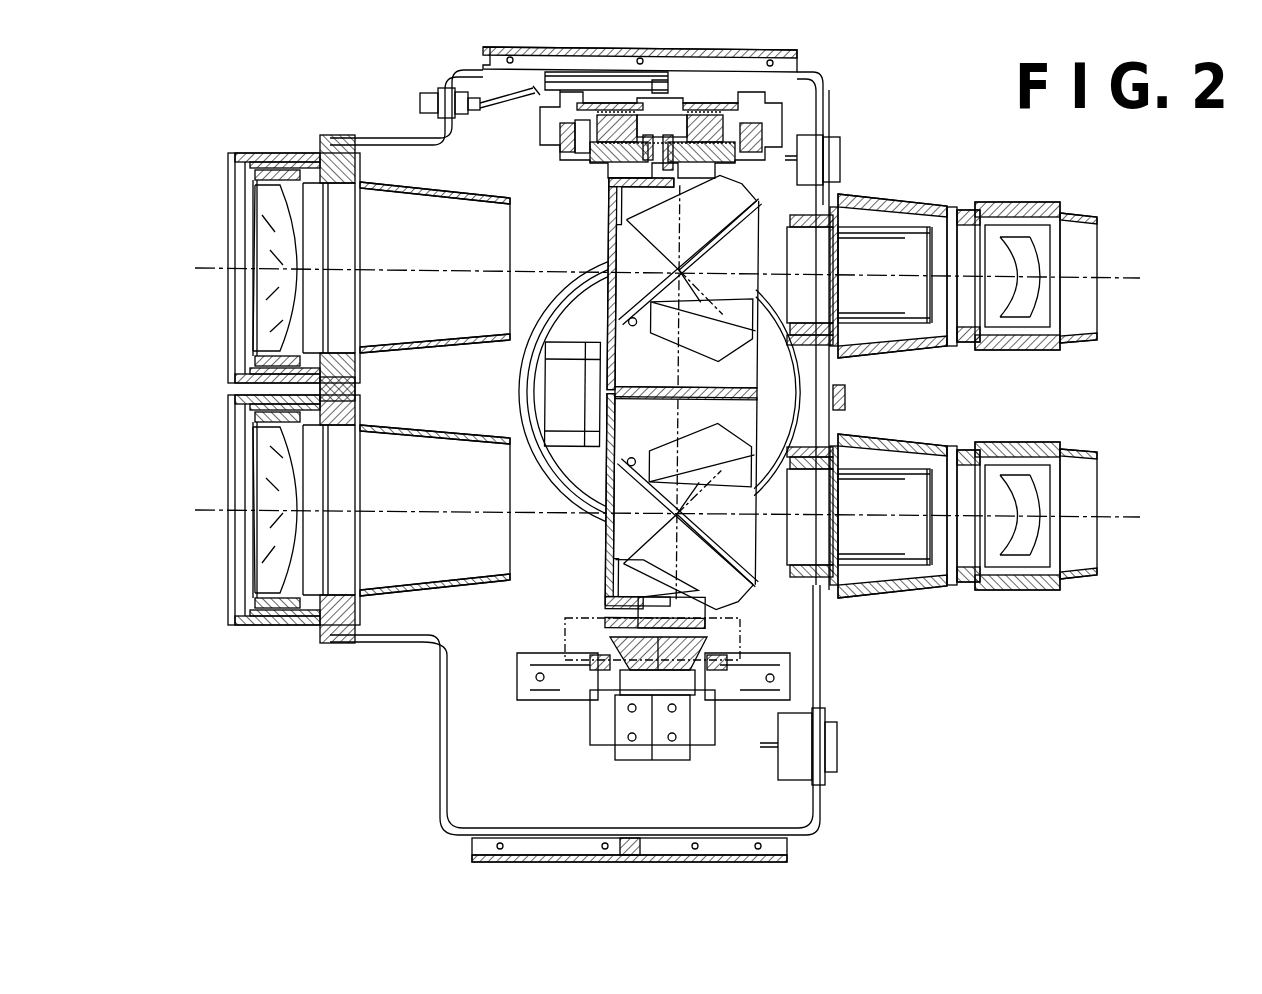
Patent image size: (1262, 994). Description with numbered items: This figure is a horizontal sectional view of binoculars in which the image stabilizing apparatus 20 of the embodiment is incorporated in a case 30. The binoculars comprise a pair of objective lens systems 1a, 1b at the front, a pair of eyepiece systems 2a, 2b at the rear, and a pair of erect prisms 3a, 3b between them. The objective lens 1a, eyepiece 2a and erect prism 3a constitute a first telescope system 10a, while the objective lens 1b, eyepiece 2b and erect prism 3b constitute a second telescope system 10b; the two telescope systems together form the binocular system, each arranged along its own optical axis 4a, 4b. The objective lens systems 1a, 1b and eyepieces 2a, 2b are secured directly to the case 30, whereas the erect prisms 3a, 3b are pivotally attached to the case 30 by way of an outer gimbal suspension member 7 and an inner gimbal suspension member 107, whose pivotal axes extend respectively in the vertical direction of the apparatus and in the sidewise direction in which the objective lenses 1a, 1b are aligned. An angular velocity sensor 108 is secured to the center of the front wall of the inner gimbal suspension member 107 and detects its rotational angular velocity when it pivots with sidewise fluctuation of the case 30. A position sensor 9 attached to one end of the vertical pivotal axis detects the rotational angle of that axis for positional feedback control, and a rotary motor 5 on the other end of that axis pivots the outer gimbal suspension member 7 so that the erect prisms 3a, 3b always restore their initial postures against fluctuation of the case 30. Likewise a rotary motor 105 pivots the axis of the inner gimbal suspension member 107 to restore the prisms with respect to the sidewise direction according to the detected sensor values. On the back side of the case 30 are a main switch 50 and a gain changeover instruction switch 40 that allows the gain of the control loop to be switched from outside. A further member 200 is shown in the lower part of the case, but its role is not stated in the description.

The objective lens system 1a is at (260, 136).
The objective lens system 1b is at (260, 632).
The eyepiece system 2a is at (1028, 200).
The eyepiece system 2b is at (1025, 594).
The erect prism 3a is at (628, 240).
The erect prism 3b is at (632, 525).
The optical axis 4a is at (208, 247).
The optical axis 4b is at (204, 520).
The rotary motor 5 is at (672, 105).
The outer gimbal suspension member 7 is at (718, 648).
The position sensor 9 is at (608, 698).
The first telescope system 10a is at (1138, 250).
The second telescope system 10b is at (1115, 545).
The image stabilizing apparatus 20 is at (792, 102).
The case 30 is at (820, 820).
The gain changeover instruction switch 40 is at (840, 160).
The main switch 50 is at (838, 747).
The rotary motor 105 is at (545, 492).
The inner gimbal suspension member 107 is at (595, 588).
The angular velocity sensor 108 is at (560, 382).
The base plate 200 is at (790, 676).